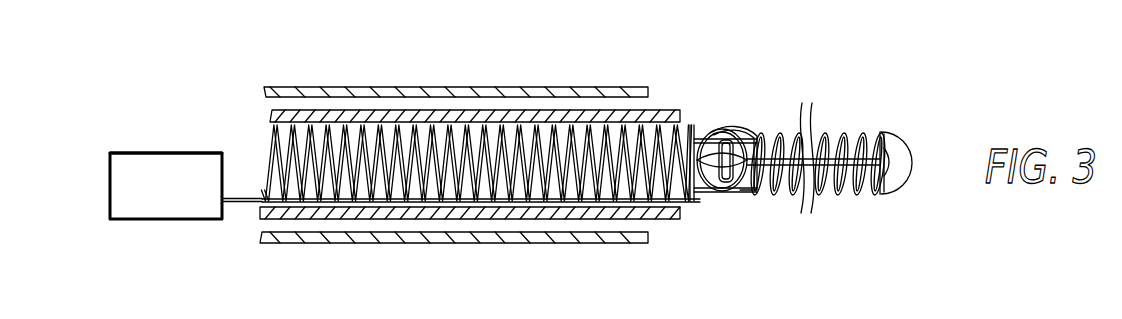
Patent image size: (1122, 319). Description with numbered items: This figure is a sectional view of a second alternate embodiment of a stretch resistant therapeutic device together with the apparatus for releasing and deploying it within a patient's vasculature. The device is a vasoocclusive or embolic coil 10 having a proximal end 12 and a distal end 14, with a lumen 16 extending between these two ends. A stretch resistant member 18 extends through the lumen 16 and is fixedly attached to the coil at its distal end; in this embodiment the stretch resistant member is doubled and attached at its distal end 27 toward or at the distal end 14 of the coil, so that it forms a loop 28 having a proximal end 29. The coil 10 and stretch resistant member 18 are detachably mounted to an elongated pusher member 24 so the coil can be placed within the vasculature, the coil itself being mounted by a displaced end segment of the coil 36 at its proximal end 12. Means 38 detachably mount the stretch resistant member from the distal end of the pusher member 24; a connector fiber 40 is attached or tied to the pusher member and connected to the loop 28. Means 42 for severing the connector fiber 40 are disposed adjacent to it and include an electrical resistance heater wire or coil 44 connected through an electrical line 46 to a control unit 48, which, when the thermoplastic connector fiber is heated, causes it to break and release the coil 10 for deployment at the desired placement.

The vasoocclusive coil 10 is at (835, 108).
The proximal end 12 is at (752, 196).
The distal end 14 is at (883, 130).
The lumen 16 is at (817, 194).
The stretch resistant member 18 is at (862, 194).
The elongated pusher member 24 is at (269, 162).
The distal end of the stretch resistant member 27 is at (885, 155).
The loop 28 is at (740, 150).
The proximal end of the loop 29 is at (712, 135).
The displaced end segment of the coil 36 is at (739, 193).
The means for detachably mounting 38 is at (699, 125).
The connector fiber 40 is at (539, 128).
The means for severing the connector fiber 42 is at (171, 222).
The electrical resistance heater wire or coil 44 is at (701, 196).
The electrical line 46 is at (240, 204).
The control unit 48 is at (130, 152).